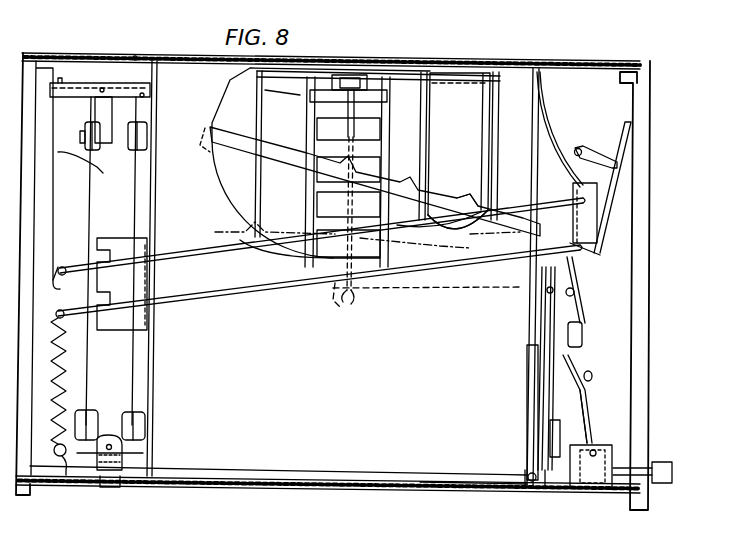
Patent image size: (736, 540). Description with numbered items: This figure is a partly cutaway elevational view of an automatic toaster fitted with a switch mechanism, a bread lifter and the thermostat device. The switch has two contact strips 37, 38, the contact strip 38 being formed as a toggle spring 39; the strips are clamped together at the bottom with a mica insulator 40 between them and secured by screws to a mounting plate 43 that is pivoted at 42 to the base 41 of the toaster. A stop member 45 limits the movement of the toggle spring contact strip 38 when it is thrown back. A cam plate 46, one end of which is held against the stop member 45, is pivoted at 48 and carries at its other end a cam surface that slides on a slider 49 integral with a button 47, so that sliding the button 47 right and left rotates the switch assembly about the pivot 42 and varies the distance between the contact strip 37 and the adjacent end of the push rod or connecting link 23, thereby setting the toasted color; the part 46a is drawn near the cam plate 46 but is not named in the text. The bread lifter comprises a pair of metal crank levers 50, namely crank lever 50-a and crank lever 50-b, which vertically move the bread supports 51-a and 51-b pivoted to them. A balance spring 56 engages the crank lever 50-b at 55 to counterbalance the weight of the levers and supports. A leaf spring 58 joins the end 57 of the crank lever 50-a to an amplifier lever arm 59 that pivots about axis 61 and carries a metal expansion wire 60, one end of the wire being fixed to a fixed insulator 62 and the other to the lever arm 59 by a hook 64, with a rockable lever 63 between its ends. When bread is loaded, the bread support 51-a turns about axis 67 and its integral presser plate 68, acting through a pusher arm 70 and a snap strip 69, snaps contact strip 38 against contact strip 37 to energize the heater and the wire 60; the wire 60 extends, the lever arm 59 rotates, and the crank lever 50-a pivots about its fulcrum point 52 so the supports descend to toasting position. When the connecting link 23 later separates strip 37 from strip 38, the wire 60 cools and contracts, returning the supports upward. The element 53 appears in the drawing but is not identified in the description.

The push rod or connecting link 23 is at (387, 290).
The contact strip 37 is at (550, 303).
The contact strip 38 is at (574, 292).
The toggle spring 39 is at (582, 337).
The insulator 40 is at (557, 433).
The base 41 is at (460, 492).
The pivot 42 is at (530, 477).
The mounting plate 43 is at (540, 372).
The stop member 45 is at (583, 358).
The cam plate 46 is at (590, 404).
The pin 46a is at (582, 384).
The button 47 is at (667, 462).
The pivot 48 is at (593, 452).
The slider 49 is at (602, 483).
The crank levers 50 is at (180, 257).
The crank lever 50-a is at (467, 210).
The crank lever 50-b is at (458, 267).
The bread support 51-a is at (282, 160).
The bread support 51-b is at (277, 250).
The fulcrum point 52 is at (112, 258).
The block 53 is at (575, 192).
The engagement point 55 is at (66, 320).
The balance spring 56 is at (70, 458).
The pivotal connection 57 is at (63, 267).
The leaf spring 58 is at (91, 171).
The amplifier lever arm 59 is at (77, 90).
The metal expansion wire 60 is at (88, 365).
The axis 61 is at (145, 85).
The fixed insulator 62 is at (148, 133).
The rockable lever 63 is at (137, 457).
The hook 64 is at (103, 118).
The axis 67 is at (597, 253).
The presser plate 68 is at (628, 138).
The snap strip 69 is at (537, 95).
The pusher arm 70 is at (596, 158).